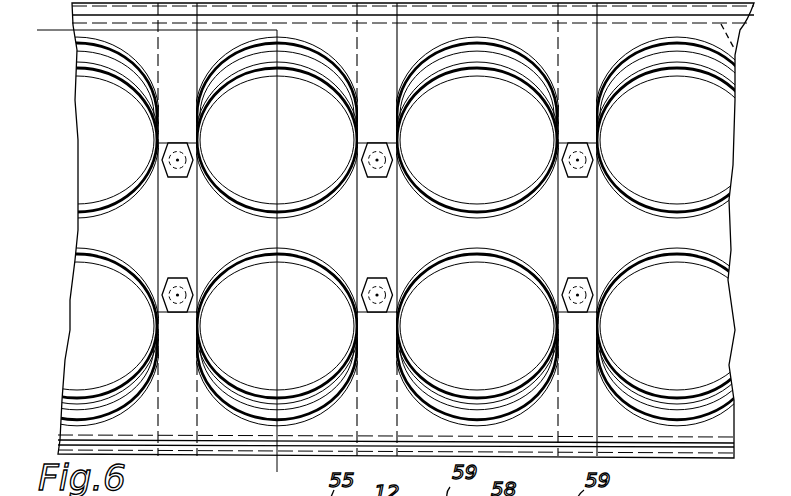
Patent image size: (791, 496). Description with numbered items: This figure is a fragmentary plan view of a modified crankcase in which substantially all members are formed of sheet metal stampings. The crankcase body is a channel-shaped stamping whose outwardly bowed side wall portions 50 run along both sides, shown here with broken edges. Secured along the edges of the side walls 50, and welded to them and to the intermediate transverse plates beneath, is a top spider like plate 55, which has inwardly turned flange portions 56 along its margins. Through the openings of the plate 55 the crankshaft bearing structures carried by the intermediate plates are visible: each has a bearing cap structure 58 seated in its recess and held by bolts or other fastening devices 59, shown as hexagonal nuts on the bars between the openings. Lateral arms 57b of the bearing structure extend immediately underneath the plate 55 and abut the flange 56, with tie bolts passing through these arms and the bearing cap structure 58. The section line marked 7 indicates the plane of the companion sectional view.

The side wall portions 50 is at (754, 5).
The top spider like plate 55 is at (147, 65).
The inwardly turned flange portions 56 is at (735, 50).
The lateral arms 57b is at (558, 72).
The bearing cap structure 58 is at (371, 225).
The bolts or other fastening devices 59 is at (193, 162).
The section line 7- 7 is at (46, 14).